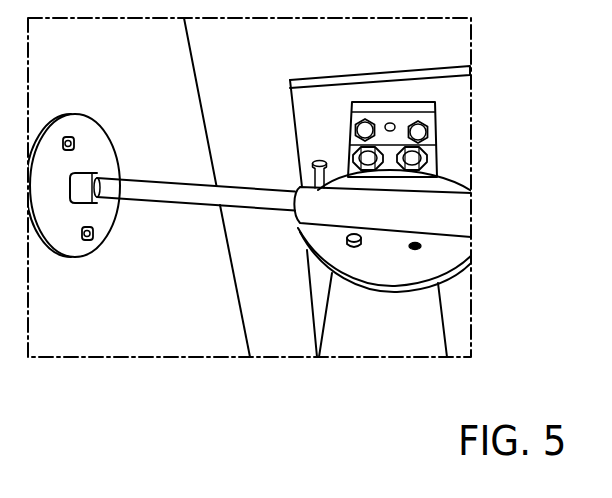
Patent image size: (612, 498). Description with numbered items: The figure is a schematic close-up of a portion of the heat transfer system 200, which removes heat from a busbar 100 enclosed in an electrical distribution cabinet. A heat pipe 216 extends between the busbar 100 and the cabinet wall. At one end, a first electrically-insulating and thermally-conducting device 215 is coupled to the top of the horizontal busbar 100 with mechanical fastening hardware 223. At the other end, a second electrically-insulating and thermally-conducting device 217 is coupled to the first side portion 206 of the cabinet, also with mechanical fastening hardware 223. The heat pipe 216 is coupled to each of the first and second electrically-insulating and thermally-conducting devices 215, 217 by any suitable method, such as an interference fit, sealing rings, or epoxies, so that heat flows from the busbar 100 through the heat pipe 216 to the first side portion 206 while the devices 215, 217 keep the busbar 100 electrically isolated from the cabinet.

The busbar 100 is at (407, 321).
The heat transfer system 200 is at (179, 103).
The first side portion 206 is at (138, 64).
The first electrically-insulating and thermally-conducting device 215 is at (330, 243).
The heat pipe 216 is at (187, 192).
The second electrically-insulating and thermally-conducting device 217 is at (62, 232).
The mechanical fastening hardware 223 is at (70, 138).